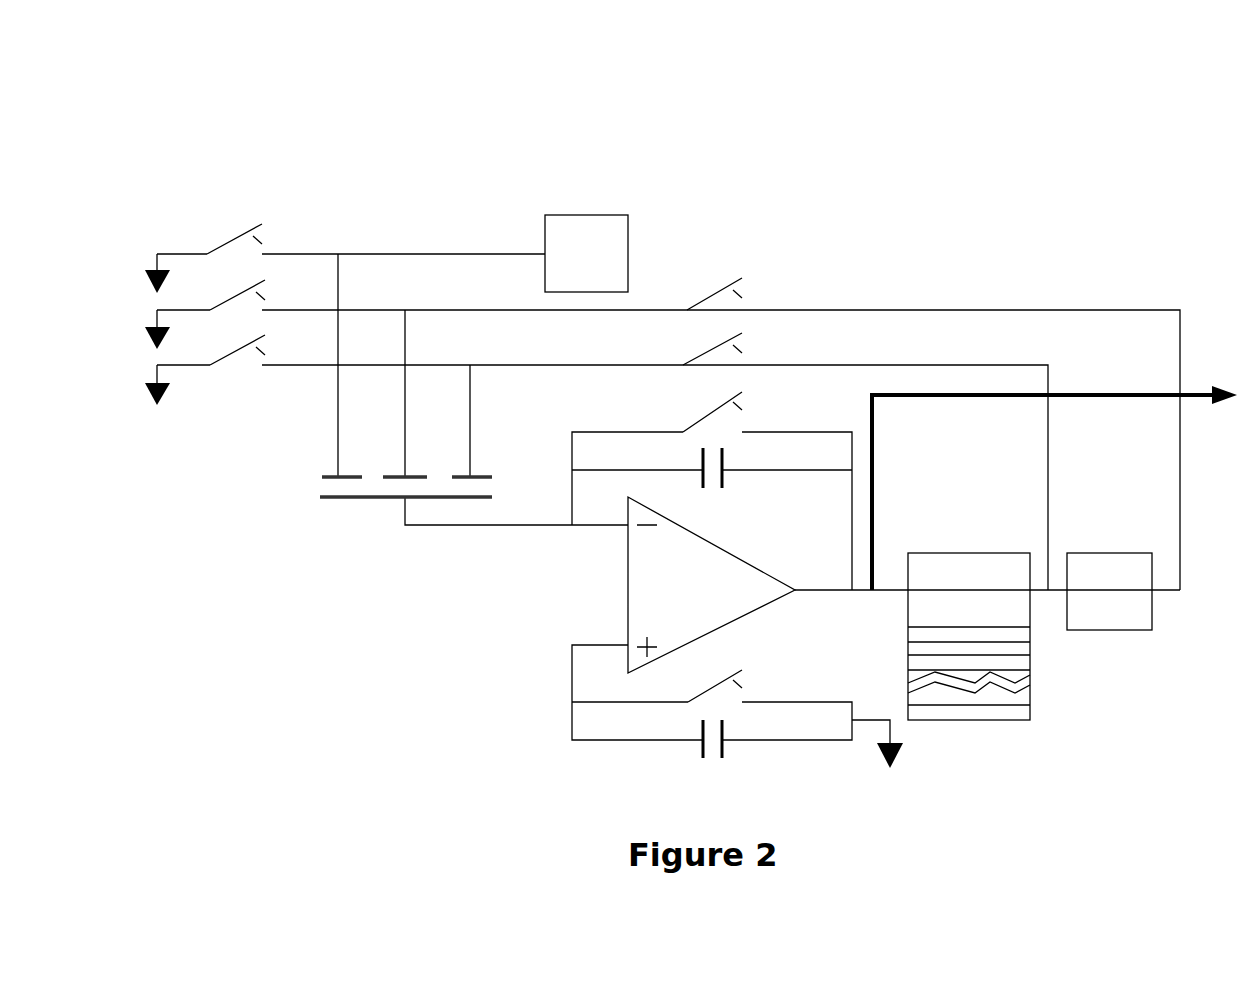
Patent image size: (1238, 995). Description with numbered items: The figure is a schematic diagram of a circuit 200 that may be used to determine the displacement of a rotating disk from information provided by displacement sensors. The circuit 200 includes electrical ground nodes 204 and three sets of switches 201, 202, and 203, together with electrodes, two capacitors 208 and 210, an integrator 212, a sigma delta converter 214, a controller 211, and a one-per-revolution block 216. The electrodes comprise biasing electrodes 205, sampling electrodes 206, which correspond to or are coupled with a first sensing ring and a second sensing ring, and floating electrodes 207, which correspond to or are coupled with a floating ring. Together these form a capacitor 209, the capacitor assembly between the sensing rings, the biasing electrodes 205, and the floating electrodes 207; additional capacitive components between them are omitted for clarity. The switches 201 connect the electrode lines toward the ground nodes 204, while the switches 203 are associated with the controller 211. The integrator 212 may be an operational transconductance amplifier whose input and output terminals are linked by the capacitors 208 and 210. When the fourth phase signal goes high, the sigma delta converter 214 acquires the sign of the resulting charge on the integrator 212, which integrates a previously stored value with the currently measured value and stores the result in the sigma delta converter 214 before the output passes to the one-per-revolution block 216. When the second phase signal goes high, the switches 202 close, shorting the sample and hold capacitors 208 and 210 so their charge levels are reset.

The circuit 200 is at (246, 126).
The switches 201 is at (211, 360).
The switches 202 is at (703, 420).
The switches 203 is at (683, 365).
The electrical ground nodes 204 is at (153, 275).
The biasing electrodes 205 is at (324, 479).
The sampling electrodes 206 is at (420, 480).
The floating electrodes 207 is at (372, 499).
The capacitor 208 is at (724, 458).
The capacitor 209 is at (321, 538).
The capacitor 210 is at (702, 748).
The controller 211 is at (555, 215).
The integrator 212 is at (711, 585).
The sigma delta converter 214 is at (1007, 553).
The 1/rev block 216 is at (1143, 553).